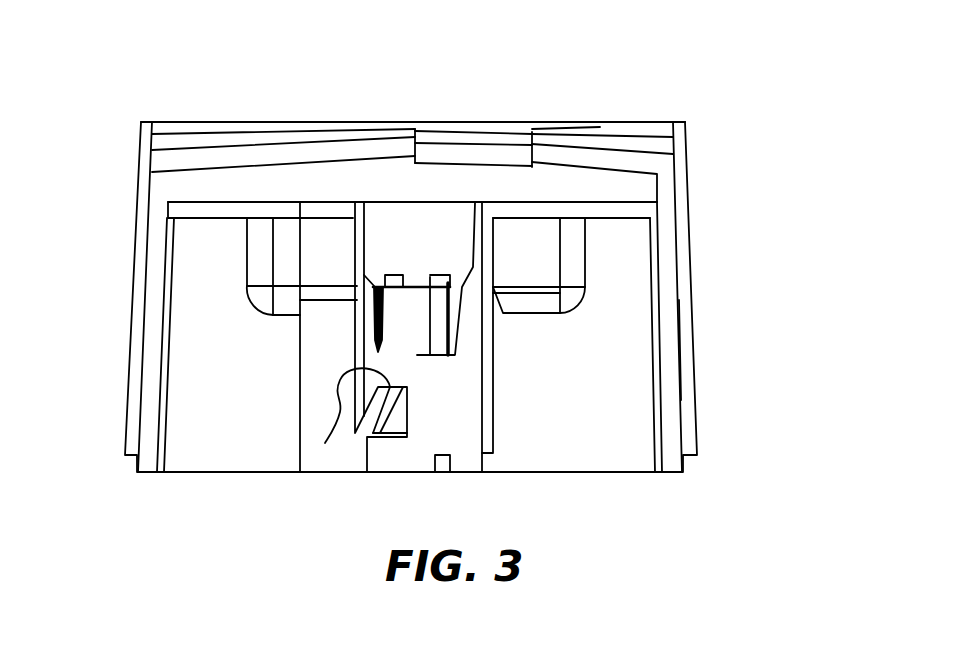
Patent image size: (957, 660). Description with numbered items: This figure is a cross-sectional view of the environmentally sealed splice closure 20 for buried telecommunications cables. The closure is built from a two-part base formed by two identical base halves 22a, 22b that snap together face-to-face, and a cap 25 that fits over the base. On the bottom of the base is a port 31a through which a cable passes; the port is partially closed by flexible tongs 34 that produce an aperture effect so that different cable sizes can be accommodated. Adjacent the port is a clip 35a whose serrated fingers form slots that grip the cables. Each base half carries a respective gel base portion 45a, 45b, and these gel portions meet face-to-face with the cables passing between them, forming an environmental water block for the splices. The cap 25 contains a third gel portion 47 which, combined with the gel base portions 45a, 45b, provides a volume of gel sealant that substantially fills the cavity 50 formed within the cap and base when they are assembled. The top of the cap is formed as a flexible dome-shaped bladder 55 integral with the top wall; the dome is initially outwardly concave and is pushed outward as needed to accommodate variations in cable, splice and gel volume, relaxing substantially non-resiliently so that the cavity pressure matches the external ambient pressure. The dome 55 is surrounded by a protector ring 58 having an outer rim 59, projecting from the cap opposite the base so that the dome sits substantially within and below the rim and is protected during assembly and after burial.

The splice closure 20 is at (130, 73).
The base half 22a is at (203, 210).
The base half 22b is at (660, 213).
The cap 25 is at (680, 270).
The port 31a is at (325, 443).
The flexible tong 34 is at (402, 412).
The clip 35a is at (377, 322).
The gel base portion 45a is at (175, 180).
The gel base portion 45b is at (633, 180).
The gel cap portion 47 is at (157, 160).
The cavity 50 is at (320, 174).
The dome-shaped bladder 55 is at (545, 137).
The protector ring 58 is at (592, 128).
The outer rim 59 is at (662, 125).